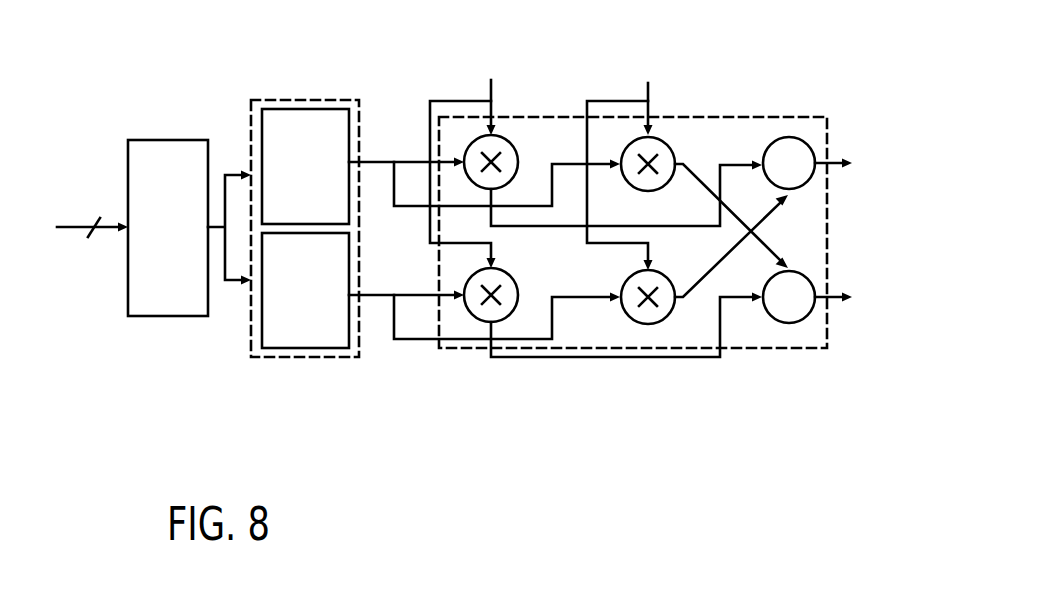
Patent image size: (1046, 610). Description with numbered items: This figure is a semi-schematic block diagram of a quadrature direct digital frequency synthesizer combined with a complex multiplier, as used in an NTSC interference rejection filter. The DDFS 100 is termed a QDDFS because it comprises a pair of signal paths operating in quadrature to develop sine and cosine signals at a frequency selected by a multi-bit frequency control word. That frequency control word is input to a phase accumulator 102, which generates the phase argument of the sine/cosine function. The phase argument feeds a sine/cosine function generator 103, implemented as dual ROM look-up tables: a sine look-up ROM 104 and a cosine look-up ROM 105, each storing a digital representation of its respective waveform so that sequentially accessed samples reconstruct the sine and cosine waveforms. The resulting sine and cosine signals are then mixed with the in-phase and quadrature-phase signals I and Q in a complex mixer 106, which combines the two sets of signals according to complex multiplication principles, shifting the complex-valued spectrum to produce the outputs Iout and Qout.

The DDFS 100 is at (182, 70).
The phase accumulator 102 is at (176, 140).
The look-up table block 103 is at (281, 100).
The sin look-up ROM 104 is at (341, 112).
The cosine look-up ROM 105 is at (317, 331).
The complex mixer 106 is at (738, 117).